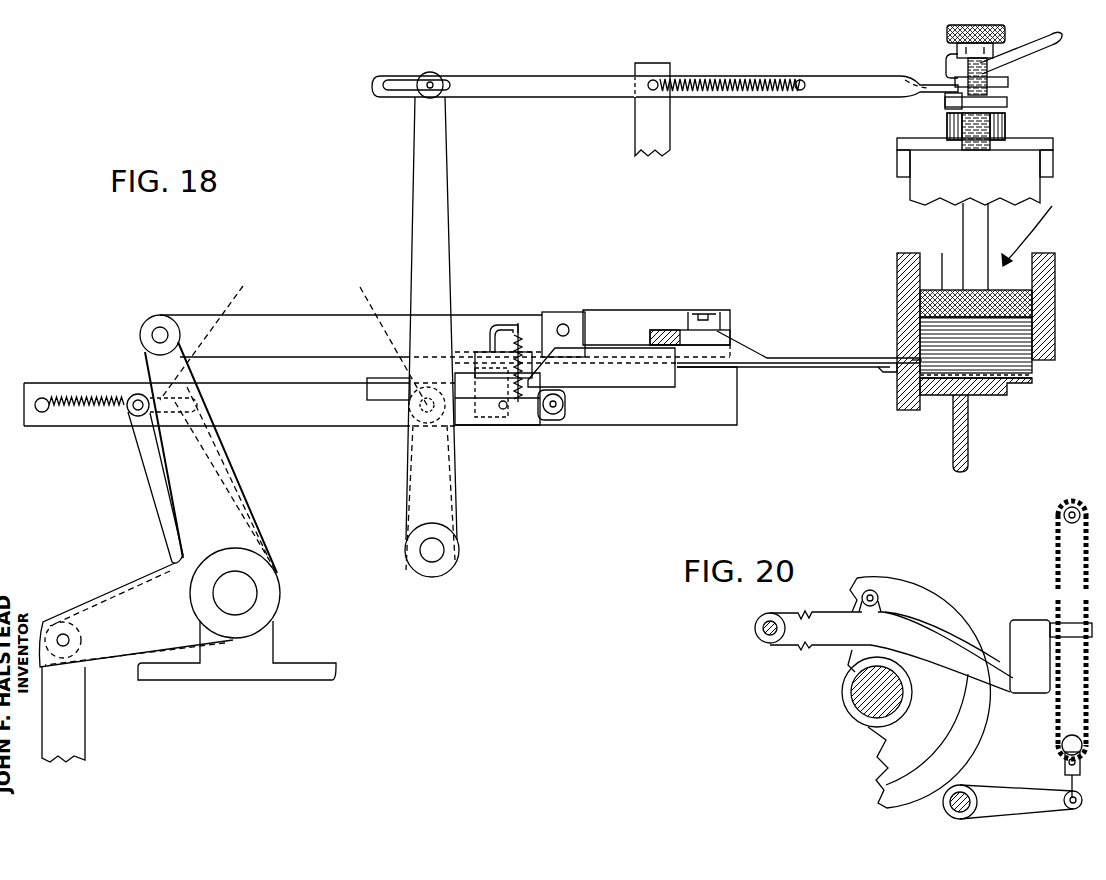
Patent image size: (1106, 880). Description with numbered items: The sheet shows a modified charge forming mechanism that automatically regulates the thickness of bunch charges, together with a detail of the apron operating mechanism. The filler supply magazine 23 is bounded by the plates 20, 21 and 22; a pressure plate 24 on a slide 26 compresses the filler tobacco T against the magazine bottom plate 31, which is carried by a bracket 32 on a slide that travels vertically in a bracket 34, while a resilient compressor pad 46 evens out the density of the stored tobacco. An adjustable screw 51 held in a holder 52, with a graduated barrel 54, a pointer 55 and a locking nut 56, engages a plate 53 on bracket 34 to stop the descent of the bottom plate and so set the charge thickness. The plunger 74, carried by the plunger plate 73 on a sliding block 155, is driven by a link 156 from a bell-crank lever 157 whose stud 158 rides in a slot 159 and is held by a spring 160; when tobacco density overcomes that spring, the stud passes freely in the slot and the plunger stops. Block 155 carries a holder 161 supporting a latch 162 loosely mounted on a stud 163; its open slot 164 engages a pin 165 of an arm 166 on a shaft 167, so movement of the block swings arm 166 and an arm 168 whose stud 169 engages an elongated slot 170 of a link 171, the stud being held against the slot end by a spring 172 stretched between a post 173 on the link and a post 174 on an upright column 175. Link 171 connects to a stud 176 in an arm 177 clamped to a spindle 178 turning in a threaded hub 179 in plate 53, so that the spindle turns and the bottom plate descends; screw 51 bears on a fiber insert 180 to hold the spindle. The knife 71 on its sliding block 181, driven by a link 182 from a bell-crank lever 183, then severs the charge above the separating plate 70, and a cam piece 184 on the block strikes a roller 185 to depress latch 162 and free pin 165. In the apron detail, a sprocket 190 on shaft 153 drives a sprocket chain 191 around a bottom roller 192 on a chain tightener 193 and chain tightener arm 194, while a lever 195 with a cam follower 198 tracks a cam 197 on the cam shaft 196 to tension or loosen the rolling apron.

In FIG. 18, the stud 169 is at (437, 77).
In FIG. 18, the elongated slot 170 is at (390, 92).
In FIG. 18, the link 171 is at (521, 99).
In FIG. 18, the arm 168 is at (449, 221).
In FIG. 18, the post 174 is at (659, 80).
In FIG. 18, the upright column 175 is at (672, 146).
In FIG. 18, the spring 172 is at (743, 79).
In FIG. 18, the post 173 is at (803, 80).
In FIG. 18, the adjustable screw 51 is at (946, 33).
In FIG. 18, the graduated barrel 54 is at (993, 50).
In FIG. 18, the nut 56 is at (1062, 40).
In FIG. 18, the pointer 55 is at (946, 68).
In FIG. 18, the holder 52 is at (1009, 82).
In FIG. 18, the fiber insert 180 is at (914, 91).
In FIG. 18, the stud 176 is at (1008, 102).
In FIG. 18, the arm 177 is at (945, 103).
In FIG. 18, the spindle 178 is at (1005, 125).
In FIG. 18, the plate 53 is at (1046, 146).
In FIG. 18, the threaded hub 179 is at (945, 127).
In FIG. 18, the bracket 34 is at (926, 170).
In FIG. 18, the filler supply magazine 23 is at (1040, 226).
In FIG. 18, the plate 20 is at (897, 264).
In FIG. 18, the pressure plate 24 is at (942, 289).
In FIG. 18, the slide 26 is at (989, 239).
In FIG. 18, the plate 21 is at (1046, 255).
In FIG. 18, the compressor pad 46 is at (920, 302).
In FIG. 18, the separating plate 70 is at (830, 358).
In FIG. 18, the knife 71 is at (918, 361).
In FIG. 18, the plunger plate 73 is at (787, 369).
In FIG. 18, the plunger 74 is at (885, 373).
In FIG. 18, the plate 22 is at (908, 412).
In FIG. 18, the magazine bottom plate 31 is at (1006, 379).
In FIG. 18, the filler tobacco T is at (1020, 372).
In FIG. 18, the bracket 32 is at (969, 452).
In FIG. 18, the slot 159 is at (218, 423).
In FIG. 18, the link 182 is at (297, 315).
In FIG. 18, the pin 165 is at (508, 339).
In FIG. 18, the holder 161 is at (471, 352).
In FIG. 18, the sliding block 181 is at (630, 310).
In FIG. 18, the stud 158 is at (134, 396).
In FIG. 18, the spring 160 is at (60, 416).
In FIG. 18, the bell-crank lever 157 is at (146, 490).
In FIG. 18, the bell-crank lever 183 is at (243, 487).
In FIG. 18, the link 156 is at (278, 430).
In FIG. 18, the open slot 164 is at (408, 437).
In FIG. 18, the arm 166 is at (408, 475).
In FIG. 18, the shaft 167 is at (432, 563).
In FIG. 18, the latch 162 is at (468, 425).
In FIG. 18, the stud 163 is at (504, 410).
In FIG. 18, the cam piece 184 is at (528, 395).
In FIG. 18, the roller 185 is at (568, 406).
In FIG. 18, the sliding block 155 is at (662, 428).
In FIG. 20, the shaft 153 is at (1060, 514).
In FIG. 20, the cam follower 198 is at (872, 590).
In FIG. 20, the cam 197 is at (912, 628).
In FIG. 20, the sprocket 190 is at (1058, 538).
In FIG. 20, the sprocket chain 191 is at (1056, 560).
In FIG. 20, the lever 195 is at (1028, 636).
In FIG. 20, the bottom roller 192 is at (1060, 731).
In FIG. 20, the chain tightener 193 is at (1066, 764).
In FIG. 20, the chain tightener arm 194 is at (1008, 800).
In FIG. 20, the cam shaft 196 is at (862, 708).